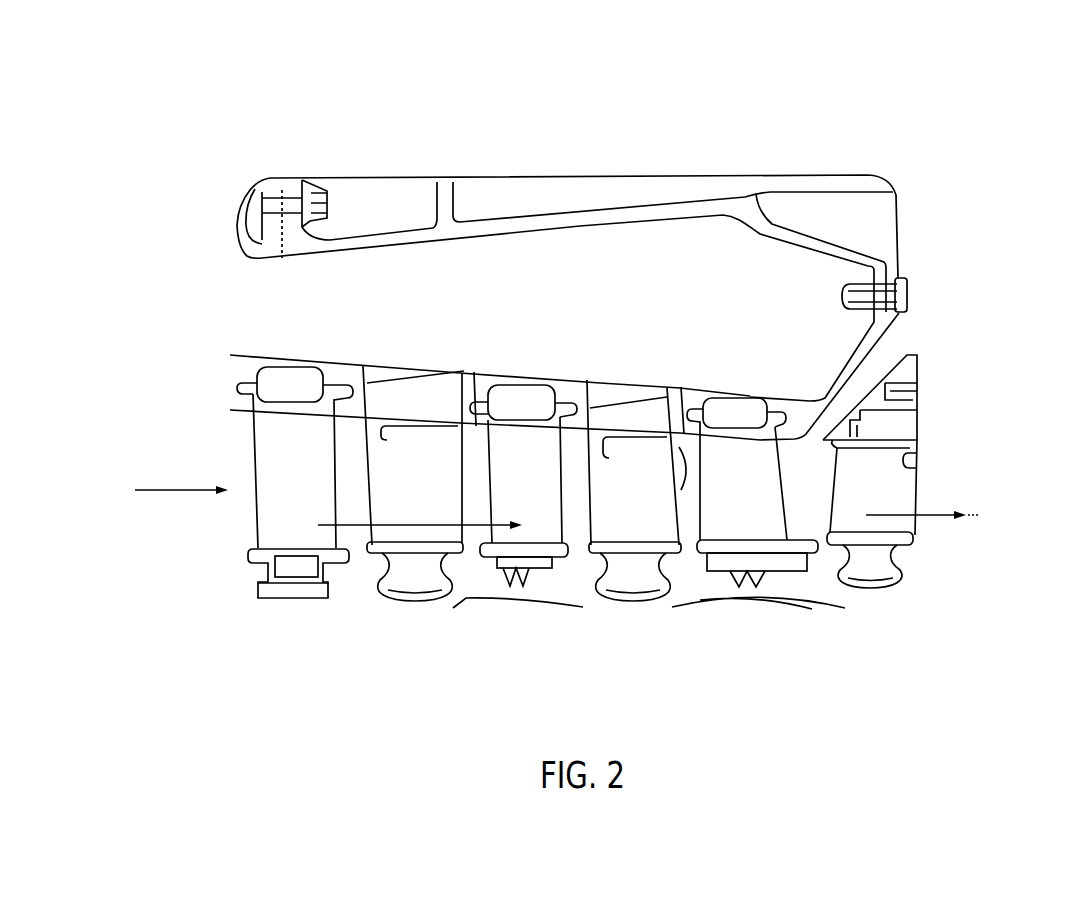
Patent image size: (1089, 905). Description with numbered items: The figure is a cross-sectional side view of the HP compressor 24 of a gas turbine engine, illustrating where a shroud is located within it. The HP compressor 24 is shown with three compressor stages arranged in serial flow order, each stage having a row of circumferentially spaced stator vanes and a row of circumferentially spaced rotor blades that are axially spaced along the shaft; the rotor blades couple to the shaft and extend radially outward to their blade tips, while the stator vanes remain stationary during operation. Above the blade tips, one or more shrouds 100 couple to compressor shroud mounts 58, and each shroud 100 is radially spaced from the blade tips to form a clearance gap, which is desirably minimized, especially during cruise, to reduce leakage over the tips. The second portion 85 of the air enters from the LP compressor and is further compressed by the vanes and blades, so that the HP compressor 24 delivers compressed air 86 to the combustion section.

The HP compressor 24 is at (222, 115).
The compressor shroud mount 58 is at (388, 377).
The second portion of the air 85 is at (182, 490).
The compressed air 86 is at (932, 517).
The shroud 100 is at (423, 403).